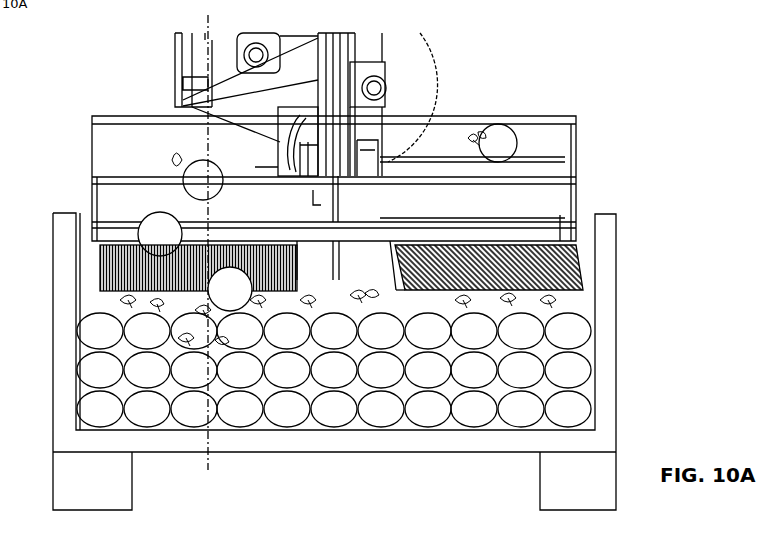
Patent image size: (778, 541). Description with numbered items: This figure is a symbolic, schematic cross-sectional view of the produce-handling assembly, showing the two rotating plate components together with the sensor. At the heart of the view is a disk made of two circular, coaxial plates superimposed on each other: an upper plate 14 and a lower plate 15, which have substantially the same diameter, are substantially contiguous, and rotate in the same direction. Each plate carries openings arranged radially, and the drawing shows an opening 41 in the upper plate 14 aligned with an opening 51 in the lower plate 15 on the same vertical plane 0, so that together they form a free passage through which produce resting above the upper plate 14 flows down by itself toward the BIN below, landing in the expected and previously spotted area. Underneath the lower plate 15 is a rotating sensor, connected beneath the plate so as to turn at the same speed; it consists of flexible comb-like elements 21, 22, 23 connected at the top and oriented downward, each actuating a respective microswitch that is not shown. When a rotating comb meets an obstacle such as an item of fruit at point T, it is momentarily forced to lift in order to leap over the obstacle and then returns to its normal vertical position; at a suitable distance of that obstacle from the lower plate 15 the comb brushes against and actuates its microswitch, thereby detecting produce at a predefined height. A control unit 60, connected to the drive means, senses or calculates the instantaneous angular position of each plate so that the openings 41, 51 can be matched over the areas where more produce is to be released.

The upper plate 14 is at (521, 172).
The lower plate 15 is at (530, 220).
The flexible comb-like element 21 is at (100, 290).
The flexible comb-like element 22 is at (582, 262).
The flexible comb-like element 23 is at (330, 278).
The opening 41 is at (163, 175).
The opening 51 is at (213, 222).
The control unit 60 is at (447, 82).
The vertical plane 0 is at (205, 29).
The obstacle point T is at (399, 278).
The bin BIN is at (599, 361).